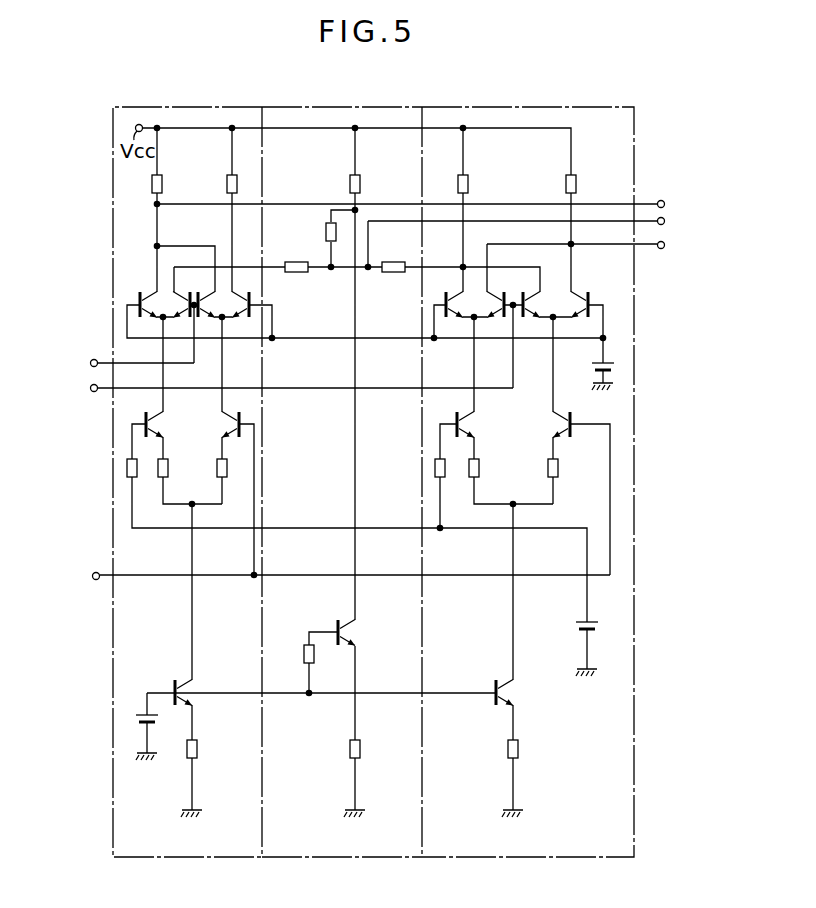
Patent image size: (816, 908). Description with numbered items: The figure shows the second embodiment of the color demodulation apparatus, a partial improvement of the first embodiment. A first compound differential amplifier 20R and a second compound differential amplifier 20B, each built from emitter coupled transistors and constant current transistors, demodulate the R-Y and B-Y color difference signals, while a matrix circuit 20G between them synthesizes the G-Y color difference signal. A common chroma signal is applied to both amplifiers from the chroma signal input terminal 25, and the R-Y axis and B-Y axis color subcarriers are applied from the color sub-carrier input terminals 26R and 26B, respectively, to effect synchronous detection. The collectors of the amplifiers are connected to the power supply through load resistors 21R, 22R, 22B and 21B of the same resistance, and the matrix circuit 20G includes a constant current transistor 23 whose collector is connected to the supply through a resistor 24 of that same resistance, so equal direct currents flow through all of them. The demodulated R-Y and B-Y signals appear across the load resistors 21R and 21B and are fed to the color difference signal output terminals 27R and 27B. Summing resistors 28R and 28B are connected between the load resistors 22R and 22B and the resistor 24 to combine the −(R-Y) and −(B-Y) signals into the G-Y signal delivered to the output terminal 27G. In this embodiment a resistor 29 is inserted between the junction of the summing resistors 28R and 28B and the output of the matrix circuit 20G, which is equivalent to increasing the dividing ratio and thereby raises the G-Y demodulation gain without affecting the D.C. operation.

The first compound differential amplifier 20R is at (240, 106).
The matrix circuit 20G is at (388, 106).
The second compound differential amplifier 20B is at (556, 106).
The load resistor 21R is at (164, 183).
The load resistor 22R is at (238, 185).
The resistor 24 is at (361, 185).
The load resistor 22B is at (469, 185).
The load resistor 21B is at (577, 185).
The color difference signal output terminal 27R is at (665, 201).
The output terminal 27G is at (665, 221).
The color difference signal output terminal 27B is at (665, 247).
The resistor 29 is at (326, 229).
The summing resistor 28R is at (300, 272).
The summing resistor 28B is at (395, 272).
The color sub-carrier input terminal 26R is at (90, 362).
The color sub-carrier input terminal 26B is at (90, 389).
The chroma signal input terminal 25 is at (93, 580).
The constant current transistor 23 is at (341, 632).